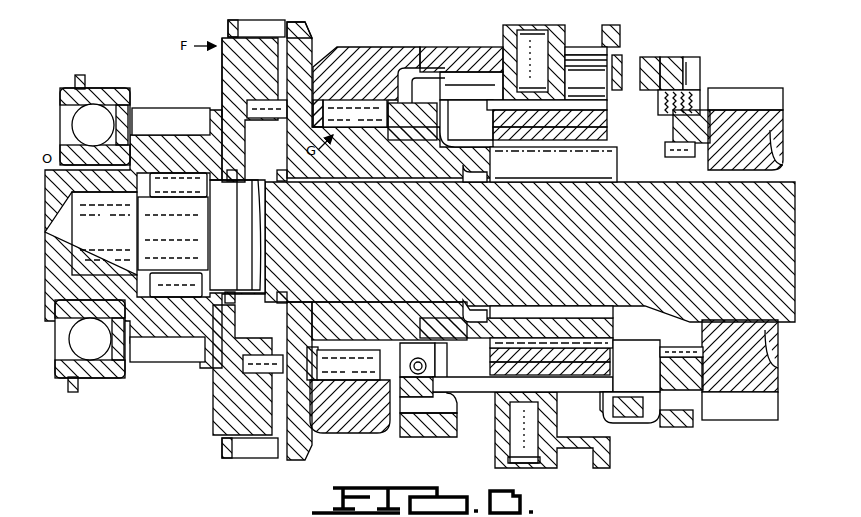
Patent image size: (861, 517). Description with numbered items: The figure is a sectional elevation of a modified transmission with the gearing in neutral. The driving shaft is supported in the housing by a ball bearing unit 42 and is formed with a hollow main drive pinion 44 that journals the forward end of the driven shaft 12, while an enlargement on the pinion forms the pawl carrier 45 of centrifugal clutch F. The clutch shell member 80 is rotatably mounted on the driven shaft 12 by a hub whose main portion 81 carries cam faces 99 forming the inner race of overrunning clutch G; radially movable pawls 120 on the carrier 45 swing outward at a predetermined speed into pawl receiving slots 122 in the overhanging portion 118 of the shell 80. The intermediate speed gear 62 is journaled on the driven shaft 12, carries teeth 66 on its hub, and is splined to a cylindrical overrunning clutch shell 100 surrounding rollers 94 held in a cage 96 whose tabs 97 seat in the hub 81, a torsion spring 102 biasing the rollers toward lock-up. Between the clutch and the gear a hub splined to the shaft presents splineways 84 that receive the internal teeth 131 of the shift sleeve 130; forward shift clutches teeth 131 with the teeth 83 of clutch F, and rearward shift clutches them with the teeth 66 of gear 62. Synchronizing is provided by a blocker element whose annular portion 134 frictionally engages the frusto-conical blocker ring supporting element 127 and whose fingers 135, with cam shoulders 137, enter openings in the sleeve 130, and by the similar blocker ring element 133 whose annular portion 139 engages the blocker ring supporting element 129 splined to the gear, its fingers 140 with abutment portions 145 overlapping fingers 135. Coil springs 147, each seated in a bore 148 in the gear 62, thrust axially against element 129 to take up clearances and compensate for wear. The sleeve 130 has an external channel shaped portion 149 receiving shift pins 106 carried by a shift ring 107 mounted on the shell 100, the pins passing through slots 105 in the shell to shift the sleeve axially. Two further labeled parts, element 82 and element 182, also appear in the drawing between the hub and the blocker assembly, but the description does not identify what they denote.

The driven shaft 12 is at (724, 254).
The ball bearing unit 42 is at (140, 86).
The main drive pinion 44 is at (157, 116).
The pawl carrier 45 is at (222, 78).
The intermediate speed gear 62 is at (762, 90).
The teeth 66 is at (652, 148).
The clutch shell member 80 is at (313, 44).
The main portion of hub 81 is at (333, 313).
The annular gap 82 is at (518, 152).
The teeth of centrifugal clutch 83 is at (450, 140).
The external splines 84 is at (595, 150).
The rollers 94 is at (348, 108).
The cage 96 is at (395, 344).
The tabs 97 is at (385, 133).
The cam faces 99 is at (342, 135).
The overrunning clutch shell 100 is at (383, 52).
The torsion spring 102 is at (440, 357).
The slots 105 is at (470, 52).
The shift pins 106 is at (538, 42).
The shift ring 107 is at (616, 28).
The overhanging portion 118 is at (292, 26).
The pawls 120 is at (240, 62).
The pawl receiving slots 122 is at (243, 475).
The blocker ring supporting element 127 is at (446, 128).
The blocker ring supporting element 129 is at (666, 60).
The shift sleeve 130 is at (473, 373).
The internal teeth 131 is at (625, 337).
The blocker ring element 133 is at (574, 84).
The annular portion 134 is at (436, 66).
The fingers 135 is at (455, 102).
The cam shoulders 137 is at (283, 394).
The annular portion 139 is at (262, 103).
The fingers 140 is at (565, 104).
The abutment portion 145 is at (568, 112).
The coil springs 147 is at (695, 90).
The bore 148 is at (670, 116).
The channel shaped portion 149 is at (565, 94).
The chamber 182 is at (452, 84).